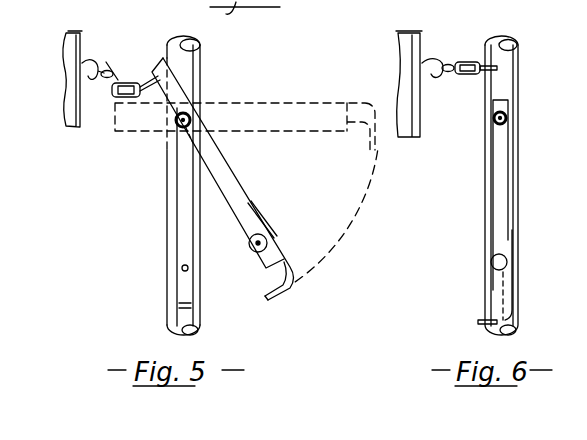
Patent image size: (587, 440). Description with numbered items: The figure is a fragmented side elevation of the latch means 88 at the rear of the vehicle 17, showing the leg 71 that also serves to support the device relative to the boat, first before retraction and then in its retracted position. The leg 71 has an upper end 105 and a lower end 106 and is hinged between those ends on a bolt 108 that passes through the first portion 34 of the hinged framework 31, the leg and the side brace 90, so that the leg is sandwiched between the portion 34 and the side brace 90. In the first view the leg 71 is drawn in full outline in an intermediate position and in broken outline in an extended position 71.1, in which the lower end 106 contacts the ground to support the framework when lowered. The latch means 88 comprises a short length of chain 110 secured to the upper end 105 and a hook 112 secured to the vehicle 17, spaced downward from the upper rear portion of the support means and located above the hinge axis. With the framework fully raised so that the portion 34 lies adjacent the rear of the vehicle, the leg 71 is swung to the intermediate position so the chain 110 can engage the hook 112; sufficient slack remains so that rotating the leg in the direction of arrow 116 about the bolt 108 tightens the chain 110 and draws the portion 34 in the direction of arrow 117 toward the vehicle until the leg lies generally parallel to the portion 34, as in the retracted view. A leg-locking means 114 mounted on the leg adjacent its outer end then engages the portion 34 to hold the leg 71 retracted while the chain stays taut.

In FIG. 5, the wall 17 is at (80, 33).
In FIG. 6, the wall 17 is at (415, 32).
In FIG. 5, the frame tube 31 is at (213, 63).
In FIG. 6, the frame tube 31 is at (525, 57).
In FIG. 5, the first portion 34 is at (168, 220).
In FIG. 6, the first portion 34 is at (520, 162).
In FIG. 5, the leg 71 is at (243, 192).
In FIG. 6, the leg 71 is at (506, 85).
In FIG. 5, the extended position 71.1 is at (245, 114).
In FIG. 5, the latch means 88 is at (108, 114).
In FIG. 6, the latch means 88 is at (466, 135).
In FIG. 5, the side brace 90 is at (177, 248).
In FIG. 6, the side brace 90 is at (490, 196).
In FIG. 5, the upper end 105 is at (153, 62).
In FIG. 5, the lower end 106 is at (287, 289).
In FIG. 6, the lower end 106 is at (480, 323).
In FIG. 5, the bolt 108 is at (176, 130).
In FIG. 6, the bolt 108 is at (493, 118).
In FIG. 5, the chain 110 is at (126, 83).
In FIG. 6, the chain 110 is at (466, 62).
In FIG. 5, the hook 112 is at (97, 88).
In FIG. 6, the hook 112 is at (429, 72).
In FIG. 5, the leg-locking means 114 is at (250, 246).
In FIG. 6, the leg-locking means 114 is at (490, 262).
In FIG. 5, the arrow 116 is at (348, 195).
In FIG. 5, the arrow 117 is at (148, 198).